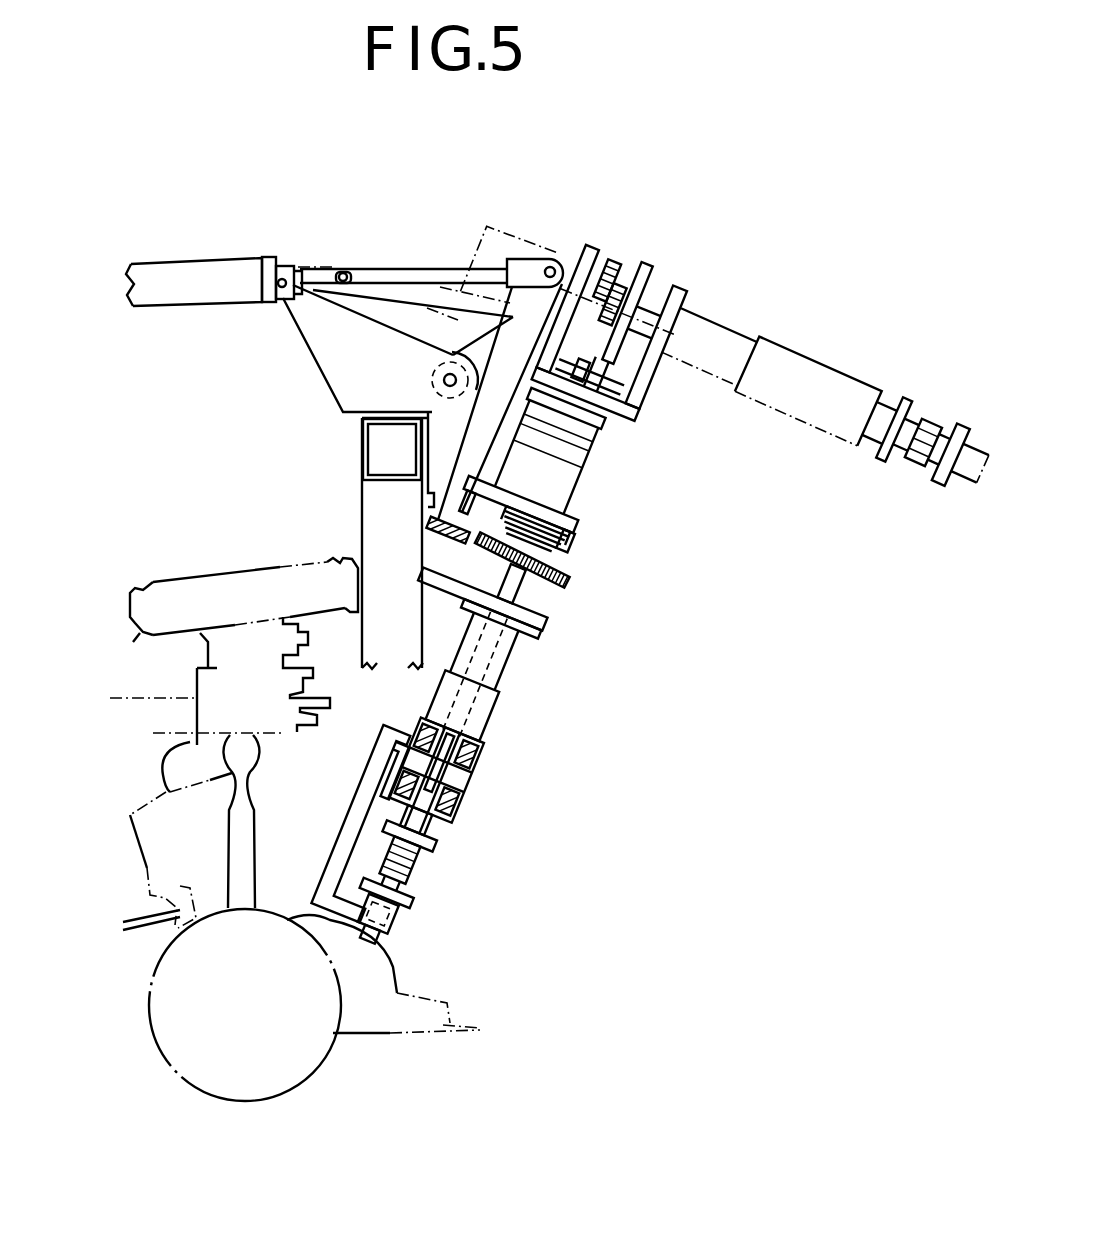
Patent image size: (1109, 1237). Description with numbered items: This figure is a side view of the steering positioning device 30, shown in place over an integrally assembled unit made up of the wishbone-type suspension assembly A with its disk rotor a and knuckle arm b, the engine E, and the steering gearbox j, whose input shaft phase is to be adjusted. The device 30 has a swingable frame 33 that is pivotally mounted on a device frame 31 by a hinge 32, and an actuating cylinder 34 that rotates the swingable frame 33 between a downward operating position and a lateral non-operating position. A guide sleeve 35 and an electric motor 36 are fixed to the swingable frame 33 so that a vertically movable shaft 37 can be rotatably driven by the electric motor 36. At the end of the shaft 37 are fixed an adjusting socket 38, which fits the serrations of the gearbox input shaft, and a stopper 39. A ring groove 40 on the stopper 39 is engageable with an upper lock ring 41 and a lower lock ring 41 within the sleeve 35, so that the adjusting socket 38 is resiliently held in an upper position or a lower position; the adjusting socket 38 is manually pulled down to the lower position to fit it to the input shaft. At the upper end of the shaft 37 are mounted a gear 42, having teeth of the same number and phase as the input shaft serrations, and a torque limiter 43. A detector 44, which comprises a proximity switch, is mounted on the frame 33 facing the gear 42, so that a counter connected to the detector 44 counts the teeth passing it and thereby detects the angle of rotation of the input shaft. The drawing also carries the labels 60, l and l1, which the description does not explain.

The steering positioning device 30 is at (733, 300).
The device frame 31 is at (365, 450).
The hinge 32 is at (443, 382).
The swingable frame 33 is at (581, 385).
The actuating cylinder 34 is at (190, 272).
The guide sleeve 35 is at (788, 345).
The electric motor 36 is at (570, 255).
The vertically movable shaft 37 is at (458, 784).
The adjusting socket 38 is at (947, 460).
The stopper 39 is at (415, 825).
The ring groove 40 is at (445, 808).
The lock ring 41 is at (478, 757).
The gear 42 is at (650, 268).
The torque limiter 43 is at (608, 272).
The detector 44 is at (447, 580).
The bracket 60 is at (370, 781).
The engine E is at (225, 588).
The knuckle arm b is at (262, 874).
The disk rotor a is at (196, 1075).
The wishbone-type suspension assembly A is at (328, 1066).
The steering gearbox j is at (399, 1037).
The line l is at (395, 960).
The line l1 is at (408, 925).